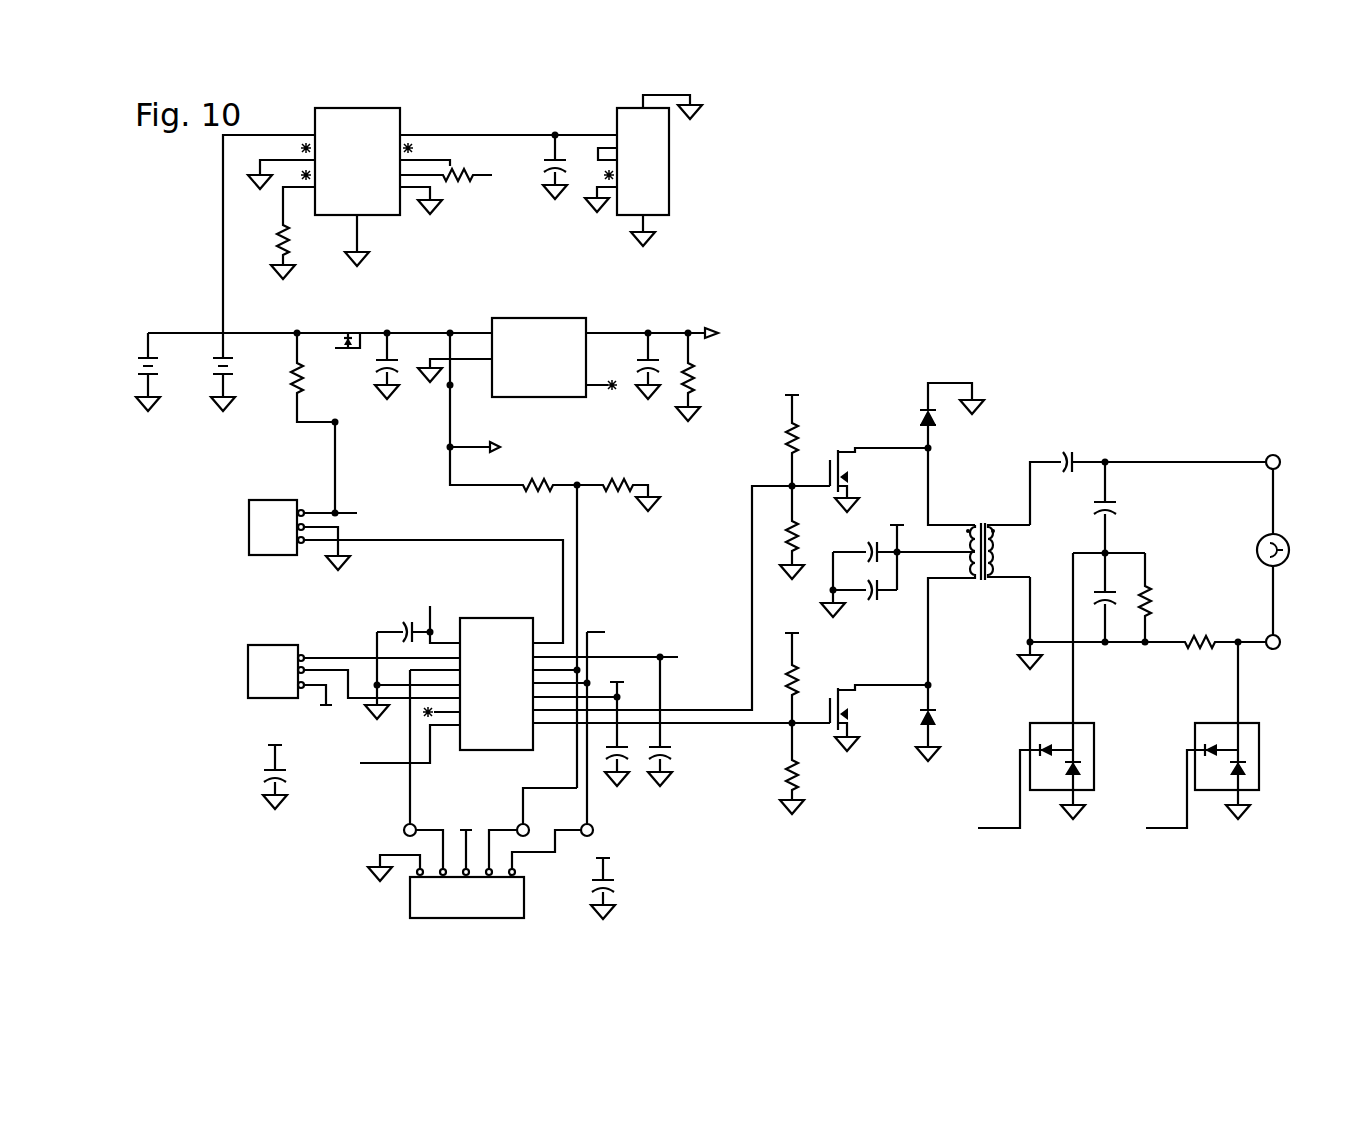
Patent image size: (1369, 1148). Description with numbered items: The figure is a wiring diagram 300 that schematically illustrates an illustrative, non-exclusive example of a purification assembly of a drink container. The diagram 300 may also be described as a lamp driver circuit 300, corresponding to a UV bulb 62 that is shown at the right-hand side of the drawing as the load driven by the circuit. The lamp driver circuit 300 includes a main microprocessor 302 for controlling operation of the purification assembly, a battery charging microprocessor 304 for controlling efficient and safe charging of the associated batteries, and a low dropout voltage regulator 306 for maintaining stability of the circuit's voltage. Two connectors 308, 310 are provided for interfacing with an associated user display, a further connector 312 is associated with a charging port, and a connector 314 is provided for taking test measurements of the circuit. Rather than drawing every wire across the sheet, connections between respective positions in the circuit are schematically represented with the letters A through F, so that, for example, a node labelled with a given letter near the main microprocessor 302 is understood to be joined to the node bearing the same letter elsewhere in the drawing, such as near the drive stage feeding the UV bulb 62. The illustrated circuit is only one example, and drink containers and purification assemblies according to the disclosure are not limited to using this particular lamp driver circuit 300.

The lamp driver circuit 300 is at (1040, 193).
The main microprocessor 302 is at (476, 695).
The battery charging microprocessor 304 is at (337, 173).
The low dropout voltage regulator 306 is at (519, 369).
The connector 308 is at (255, 539).
The connector 310 is at (255, 683).
The connector 312 is at (623, 173).
The connector 314 is at (447, 910).
The UV bulb 62 is at (1257, 553).